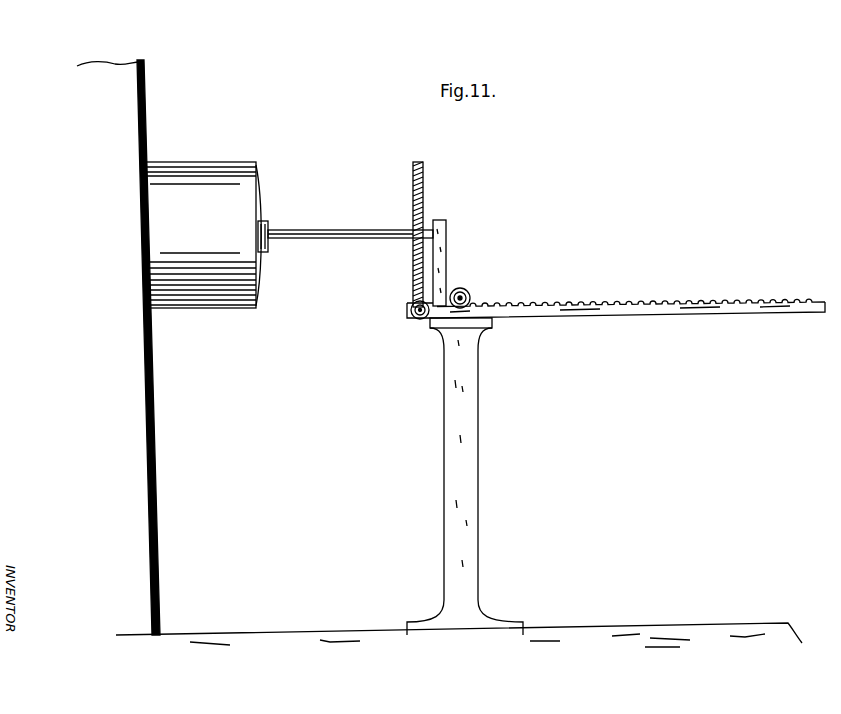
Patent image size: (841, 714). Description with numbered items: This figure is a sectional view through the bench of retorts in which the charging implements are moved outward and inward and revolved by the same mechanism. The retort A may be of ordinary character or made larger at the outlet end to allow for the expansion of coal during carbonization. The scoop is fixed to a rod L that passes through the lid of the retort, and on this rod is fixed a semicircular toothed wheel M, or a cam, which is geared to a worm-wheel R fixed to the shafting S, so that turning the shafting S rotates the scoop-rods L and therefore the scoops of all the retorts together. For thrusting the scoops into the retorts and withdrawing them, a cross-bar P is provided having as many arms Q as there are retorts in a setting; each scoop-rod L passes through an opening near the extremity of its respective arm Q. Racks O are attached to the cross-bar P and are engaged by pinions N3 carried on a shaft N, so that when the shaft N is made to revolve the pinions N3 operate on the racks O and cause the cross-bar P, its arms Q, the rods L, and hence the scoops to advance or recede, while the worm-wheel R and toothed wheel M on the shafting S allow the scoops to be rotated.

The retort A is at (203, 235).
The scoop-rod L is at (318, 231).
The semicircular toothed wheel M is at (424, 199).
The arm Q is at (447, 254).
The shaft N is at (470, 298).
The pinion N3 is at (463, 292).
The rack O is at (525, 307).
The cross-bar P is at (636, 316).
The worm-wheel R is at (417, 320).
The shafting S is at (405, 312).